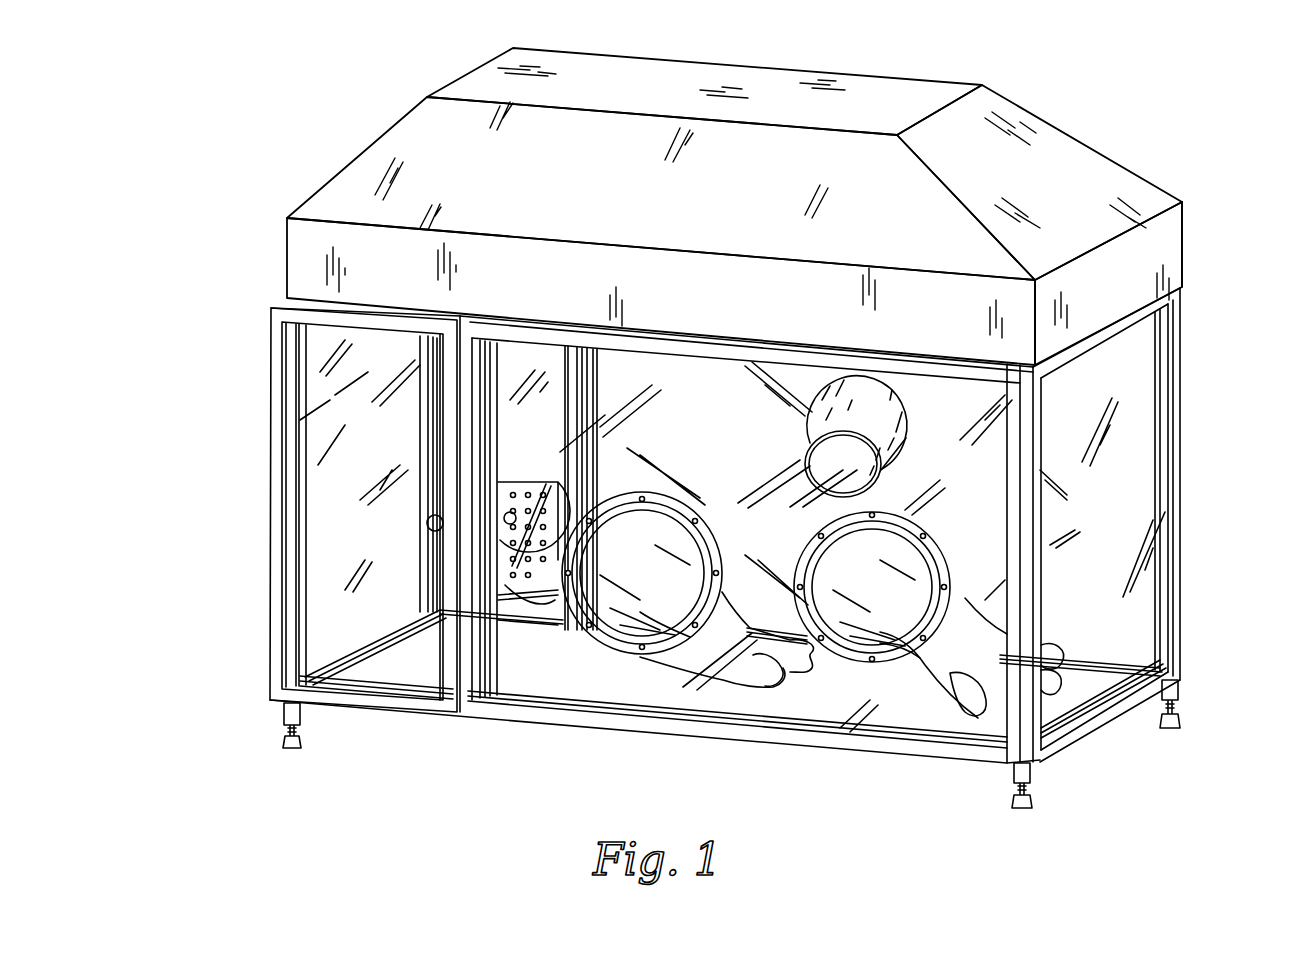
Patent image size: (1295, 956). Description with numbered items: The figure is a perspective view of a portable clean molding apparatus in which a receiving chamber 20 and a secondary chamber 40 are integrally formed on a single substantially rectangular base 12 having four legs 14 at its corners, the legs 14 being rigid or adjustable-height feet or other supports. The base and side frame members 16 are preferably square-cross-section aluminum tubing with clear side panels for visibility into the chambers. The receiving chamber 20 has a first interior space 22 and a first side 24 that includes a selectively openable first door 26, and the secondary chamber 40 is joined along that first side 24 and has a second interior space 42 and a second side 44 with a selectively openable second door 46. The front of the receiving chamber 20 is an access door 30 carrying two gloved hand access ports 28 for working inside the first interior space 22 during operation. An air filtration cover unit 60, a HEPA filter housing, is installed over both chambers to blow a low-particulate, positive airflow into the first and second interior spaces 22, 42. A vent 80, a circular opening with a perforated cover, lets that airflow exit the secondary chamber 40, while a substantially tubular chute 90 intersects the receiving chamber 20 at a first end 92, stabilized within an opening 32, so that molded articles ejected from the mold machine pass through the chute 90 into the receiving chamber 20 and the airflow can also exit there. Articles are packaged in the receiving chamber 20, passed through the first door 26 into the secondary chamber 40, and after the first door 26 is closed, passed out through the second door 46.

The base 12 is at (762, 502).
The legs 14 is at (280, 712).
The side frame members 16 is at (1184, 333).
The receiving chamber 20 is at (847, 772).
The first interior space 22 is at (1122, 448).
The first side 24 is at (555, 670).
The first door 26 is at (500, 626).
The hand access ports 28 is at (780, 663).
The access door 30 is at (957, 753).
The opening 32 is at (907, 457).
The secondary chamber 40 is at (332, 547).
The second interior space 42 is at (358, 539).
The second side 44 is at (343, 667).
The second door 46 is at (433, 706).
The air filtration cover unit 60 is at (1125, 92).
The vent 80 is at (518, 508).
The chute 90 is at (837, 462).
The first end 92 is at (808, 476).